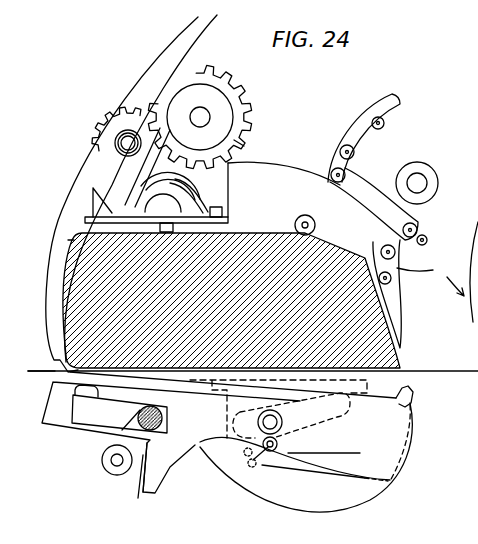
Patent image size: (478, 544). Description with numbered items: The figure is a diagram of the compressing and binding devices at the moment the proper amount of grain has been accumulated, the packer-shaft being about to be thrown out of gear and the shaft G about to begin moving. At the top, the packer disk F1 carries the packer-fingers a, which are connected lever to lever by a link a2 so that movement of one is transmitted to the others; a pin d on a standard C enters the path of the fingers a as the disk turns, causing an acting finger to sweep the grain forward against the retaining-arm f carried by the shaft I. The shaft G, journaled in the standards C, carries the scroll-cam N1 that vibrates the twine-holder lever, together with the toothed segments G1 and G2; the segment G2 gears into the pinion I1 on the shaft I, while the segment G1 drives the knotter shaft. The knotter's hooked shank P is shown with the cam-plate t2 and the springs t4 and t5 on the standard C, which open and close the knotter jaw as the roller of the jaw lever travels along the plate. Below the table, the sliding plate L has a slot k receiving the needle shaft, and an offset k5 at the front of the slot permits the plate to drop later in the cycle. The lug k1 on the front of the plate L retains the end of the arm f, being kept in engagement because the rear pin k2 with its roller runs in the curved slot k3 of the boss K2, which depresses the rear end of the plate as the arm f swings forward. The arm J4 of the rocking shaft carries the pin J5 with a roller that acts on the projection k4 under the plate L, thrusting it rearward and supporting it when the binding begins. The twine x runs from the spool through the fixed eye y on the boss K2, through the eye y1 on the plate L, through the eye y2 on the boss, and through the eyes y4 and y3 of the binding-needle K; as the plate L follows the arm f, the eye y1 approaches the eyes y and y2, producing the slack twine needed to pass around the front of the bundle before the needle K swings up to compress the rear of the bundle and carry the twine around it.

The pinion I1 is at (116, 121).
The scroll-cam N1 is at (200, 117).
The shaft G is at (200, 117).
The toothed segment G1 is at (206, 116).
The toothed segment G2 is at (244, 146).
The shaft I is at (142, 167).
The spring t4 is at (170, 184).
The cam-plate t2 is at (188, 186).
The spring t5 is at (216, 207).
The hooked shank P is at (156, 197).
The standard C is at (253, 266).
The pin d is at (303, 220).
The packer-finger a is at (380, 221).
The link a2 is at (378, 206).
The disk F1 is at (406, 180).
The retaining-arm f is at (131, 193).
The twine x is at (216, 346).
The lug k1 is at (44, 379).
The slot k is at (233, 402).
The offset k5 is at (86, 392).
The sliding plate L is at (171, 437).
The projection k4 is at (155, 467).
The pin J5 is at (112, 461).
The arm J4 is at (131, 483).
The boss K2 is at (278, 409).
The pin k2 is at (270, 422).
The curved slot k3 is at (291, 415).
The needle eye y3 is at (399, 433).
The fixed eye y is at (243, 452).
The eye y1 is at (278, 445).
The eye y2 is at (245, 467).
The needle eye y4 is at (325, 473).
The binding-needle K is at (306, 457).